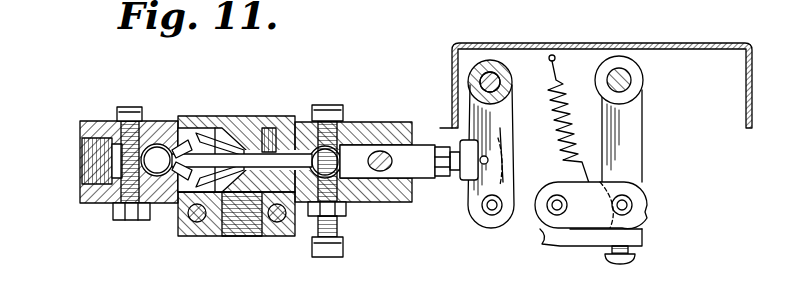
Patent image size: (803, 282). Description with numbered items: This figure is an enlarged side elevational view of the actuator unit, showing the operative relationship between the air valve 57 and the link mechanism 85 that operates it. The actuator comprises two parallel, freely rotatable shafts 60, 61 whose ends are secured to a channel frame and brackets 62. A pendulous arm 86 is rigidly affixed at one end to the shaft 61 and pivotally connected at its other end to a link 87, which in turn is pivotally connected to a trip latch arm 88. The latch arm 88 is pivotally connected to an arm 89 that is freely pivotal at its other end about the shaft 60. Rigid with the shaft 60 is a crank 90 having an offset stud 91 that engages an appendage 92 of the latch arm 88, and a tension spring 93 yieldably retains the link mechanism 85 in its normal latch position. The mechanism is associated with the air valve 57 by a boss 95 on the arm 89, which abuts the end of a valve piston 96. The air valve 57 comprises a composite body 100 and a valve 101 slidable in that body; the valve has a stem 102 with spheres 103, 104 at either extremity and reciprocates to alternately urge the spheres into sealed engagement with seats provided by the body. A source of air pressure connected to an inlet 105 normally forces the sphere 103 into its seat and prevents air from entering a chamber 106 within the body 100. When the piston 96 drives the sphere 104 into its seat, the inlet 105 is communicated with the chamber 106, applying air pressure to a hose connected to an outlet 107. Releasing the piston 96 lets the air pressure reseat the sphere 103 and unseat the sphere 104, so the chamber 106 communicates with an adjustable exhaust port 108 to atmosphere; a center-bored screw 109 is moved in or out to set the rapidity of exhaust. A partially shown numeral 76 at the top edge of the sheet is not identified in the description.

The air valve 57 is at (248, 159).
The shaft 60 is at (508, 72).
The shaft 61 is at (622, 76).
The channel frame and brackets 62 is at (712, 46).
The shaft 76 is at (473, 6).
The link mechanism 85 is at (666, 215).
The pendulous arm 86 is at (644, 99).
The link 87 is at (640, 188).
The trip latch arm 88 is at (574, 232).
The arm 89 is at (508, 134).
The crank 90 is at (506, 143).
The offset stud 91 is at (486, 160).
The appendage 92 is at (512, 164).
The tension spring 93 is at (560, 97).
The boss 95 is at (468, 182).
The valve piston 96 is at (418, 148).
The composite body 100 is at (252, 150).
The valve 101 is at (237, 116).
The stem 102 is at (262, 138).
The sphere 103 is at (153, 125).
The sphere 104 is at (340, 150).
The inlet 105 is at (82, 158).
The chamber 106 is at (188, 177).
The outlet 107 is at (244, 238).
The adjustable exhaust port 108 is at (354, 200).
The center-bored screw 109 is at (345, 244).